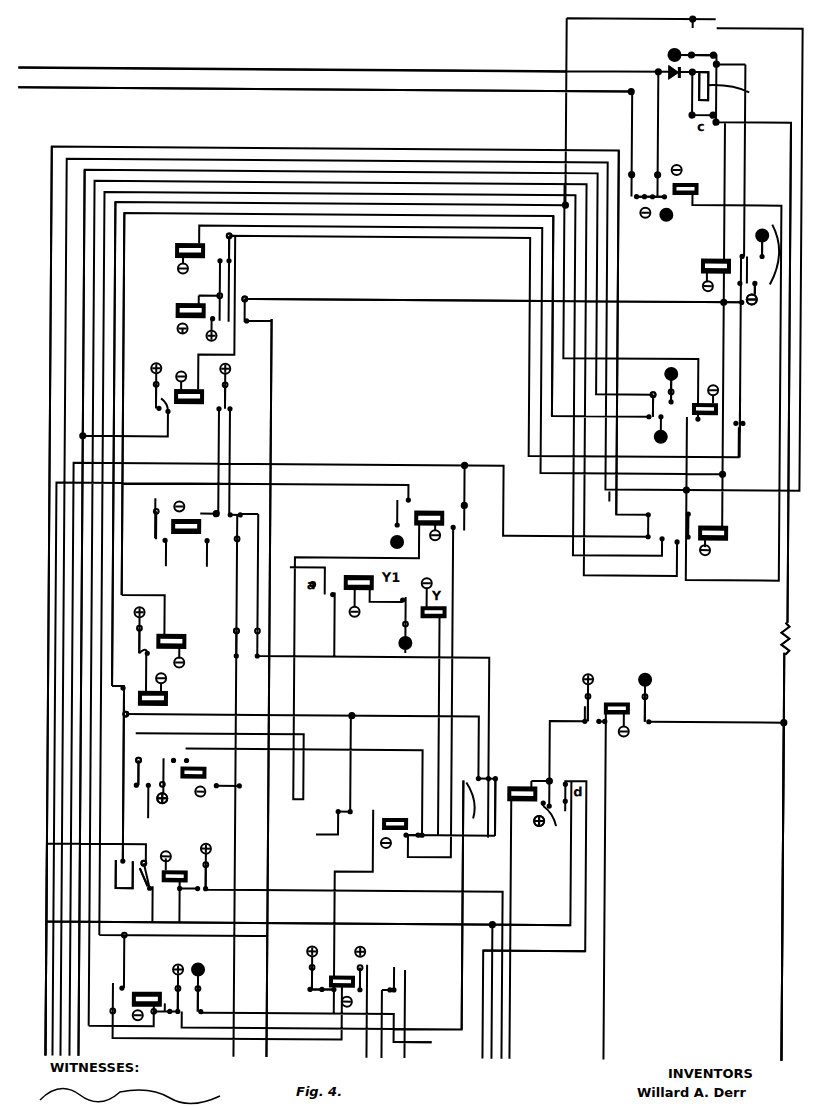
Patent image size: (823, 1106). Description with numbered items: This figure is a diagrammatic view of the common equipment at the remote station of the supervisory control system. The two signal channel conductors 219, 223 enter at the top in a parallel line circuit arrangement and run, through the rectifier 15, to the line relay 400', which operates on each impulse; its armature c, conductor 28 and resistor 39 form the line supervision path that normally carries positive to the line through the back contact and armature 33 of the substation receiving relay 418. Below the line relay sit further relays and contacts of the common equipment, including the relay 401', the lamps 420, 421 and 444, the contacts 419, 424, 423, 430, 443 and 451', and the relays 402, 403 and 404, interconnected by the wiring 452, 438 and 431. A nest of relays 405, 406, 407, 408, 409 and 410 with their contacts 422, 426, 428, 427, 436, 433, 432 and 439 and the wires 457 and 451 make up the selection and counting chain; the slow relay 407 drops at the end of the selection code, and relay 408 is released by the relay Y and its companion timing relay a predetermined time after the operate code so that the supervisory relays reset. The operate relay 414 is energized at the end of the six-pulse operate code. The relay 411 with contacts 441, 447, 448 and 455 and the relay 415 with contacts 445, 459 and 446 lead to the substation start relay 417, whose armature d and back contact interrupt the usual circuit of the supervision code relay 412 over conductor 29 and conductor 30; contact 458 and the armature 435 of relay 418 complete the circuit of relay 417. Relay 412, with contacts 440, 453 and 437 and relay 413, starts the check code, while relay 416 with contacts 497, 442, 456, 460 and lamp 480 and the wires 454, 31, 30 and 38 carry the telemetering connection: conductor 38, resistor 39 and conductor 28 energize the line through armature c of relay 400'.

The signal channel conductor 219 is at (370, 71).
The signal channel conductor 223 is at (372, 91).
The lamp 420 is at (700, 52).
The rectifier 15 is at (667, 69).
The line relay 400' is at (740, 86).
The conductor 28 is at (767, 122).
The contact 419 is at (660, 185).
The relay 401' is at (695, 180).
The lamp 421 is at (757, 234).
The relay 402 is at (706, 256).
The contact 424 is at (755, 304).
The wire 452 is at (616, 332).
The wire 438 is at (665, 358).
The lamp 444 is at (667, 392).
The wire 431 is at (548, 405).
The contact 430 is at (638, 405).
The relay 403 is at (704, 420).
The contact 423 is at (741, 412).
The contact 443 is at (690, 520).
The contact 451' is at (629, 525).
The relay 404 is at (720, 540).
The relay 405 is at (181, 245).
The contact 422 is at (230, 245).
The relay 406 is at (180, 305).
The contact 426 is at (245, 310).
The contact 428 is at (148, 387).
The slow relay 407 is at (188, 409).
The contact 427 is at (227, 396).
The wire 457 is at (82, 447).
The relay 408 is at (190, 521).
The contact 436 is at (232, 514).
The operate relay 414 is at (431, 510).
The relay 409 is at (174, 637).
The contact 433 is at (235, 642).
The wire 451 is at (295, 688).
The contact 432 is at (131, 642).
The relay 410 is at (168, 700).
The contact 439 is at (129, 718).
The contact 441 is at (143, 775).
The relay 411 is at (212, 772).
The contact 447 is at (177, 800).
The contact 448 is at (220, 790).
The contact 455 is at (338, 822).
The relay 415 is at (395, 815).
The contact 445 is at (425, 838).
The contact 459 is at (481, 903).
The contact 446 is at (498, 775).
The substation start relay 417 is at (519, 787).
The contact 458 is at (550, 826).
The armature 435 is at (586, 705).
The substation receiving relay 418 is at (628, 700).
The armature 33 is at (648, 705).
The resistor 39 is at (784, 637).
The supervision code relay 412 is at (181, 867).
The contact 440 is at (118, 795).
The contact 453 is at (372, 952).
The contact 437 is at (207, 878).
The conductor 29 is at (378, 926).
The relay 416 is at (342, 975).
The contact 497 is at (310, 985).
The contact 442 is at (320, 993).
The contact 456 is at (390, 985).
The conductor 31 is at (428, 1042).
The conductor 30 is at (570, 951).
The conductor 38 is at (785, 950).
The contact 460 is at (161, 987).
The relay 413 is at (147, 991).
The lamp 480 is at (212, 988).
The wire 454 is at (49, 994).